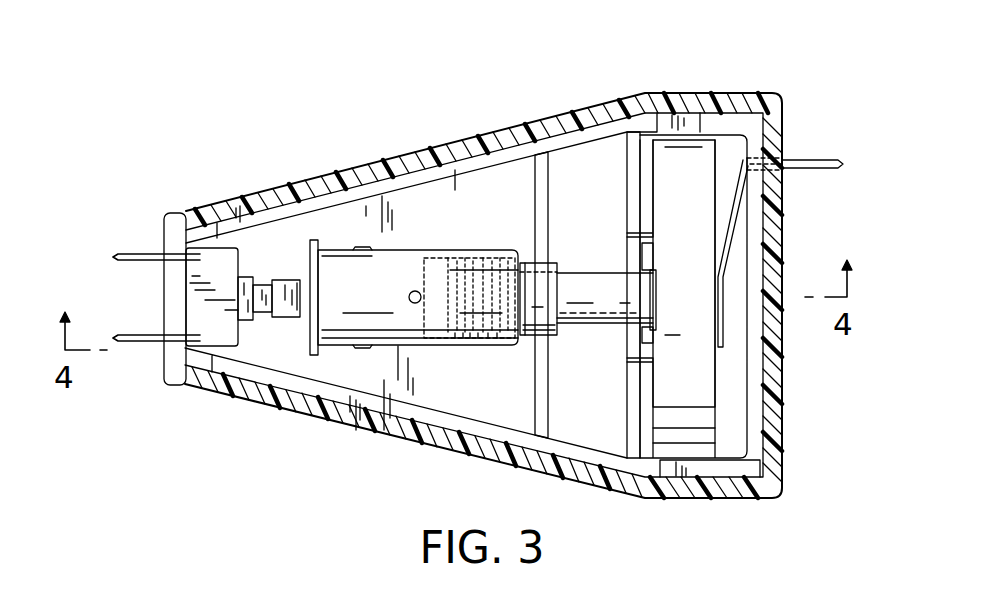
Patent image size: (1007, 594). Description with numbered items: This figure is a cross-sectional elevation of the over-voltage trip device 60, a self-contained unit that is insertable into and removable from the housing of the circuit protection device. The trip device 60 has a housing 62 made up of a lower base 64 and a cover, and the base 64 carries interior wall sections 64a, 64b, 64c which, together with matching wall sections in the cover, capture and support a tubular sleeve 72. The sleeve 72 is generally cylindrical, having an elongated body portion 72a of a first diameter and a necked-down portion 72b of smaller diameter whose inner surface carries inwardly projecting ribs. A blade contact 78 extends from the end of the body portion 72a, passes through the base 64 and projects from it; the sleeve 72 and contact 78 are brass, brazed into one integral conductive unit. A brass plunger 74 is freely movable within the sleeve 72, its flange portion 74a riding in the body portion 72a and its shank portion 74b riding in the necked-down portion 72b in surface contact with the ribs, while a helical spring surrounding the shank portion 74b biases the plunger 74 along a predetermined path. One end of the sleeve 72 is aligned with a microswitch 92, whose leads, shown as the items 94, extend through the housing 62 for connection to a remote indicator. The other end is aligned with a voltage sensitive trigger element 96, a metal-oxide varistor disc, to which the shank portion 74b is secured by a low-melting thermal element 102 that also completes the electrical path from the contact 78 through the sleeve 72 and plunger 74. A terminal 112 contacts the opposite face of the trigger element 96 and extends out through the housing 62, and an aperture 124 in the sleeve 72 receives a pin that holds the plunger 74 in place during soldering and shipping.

The over-voltage trip device 60 is at (518, 269).
The housing 62 is at (265, 178).
The lower base 64 is at (377, 425).
The interior wall section 64a is at (540, 377).
The interior wall section 64b is at (633, 402).
The interior wall section 64c is at (753, 415).
The tubular sleeve 72 is at (423, 286).
The elongated body portion 72a is at (338, 260).
The necked-down portion 72b is at (532, 263).
The plunger 74 is at (605, 279).
The flange portion 74a is at (437, 345).
The shank portion 74b is at (582, 320).
The blade contact 78 is at (362, 350).
The switch 92 is at (212, 260).
The connector pins 94 is at (143, 338).
The voltage sensitive trigger element 96 is at (672, 167).
The thermal element 102 is at (656, 282).
The terminal 112 is at (820, 157).
The aperture 124 is at (419, 292).